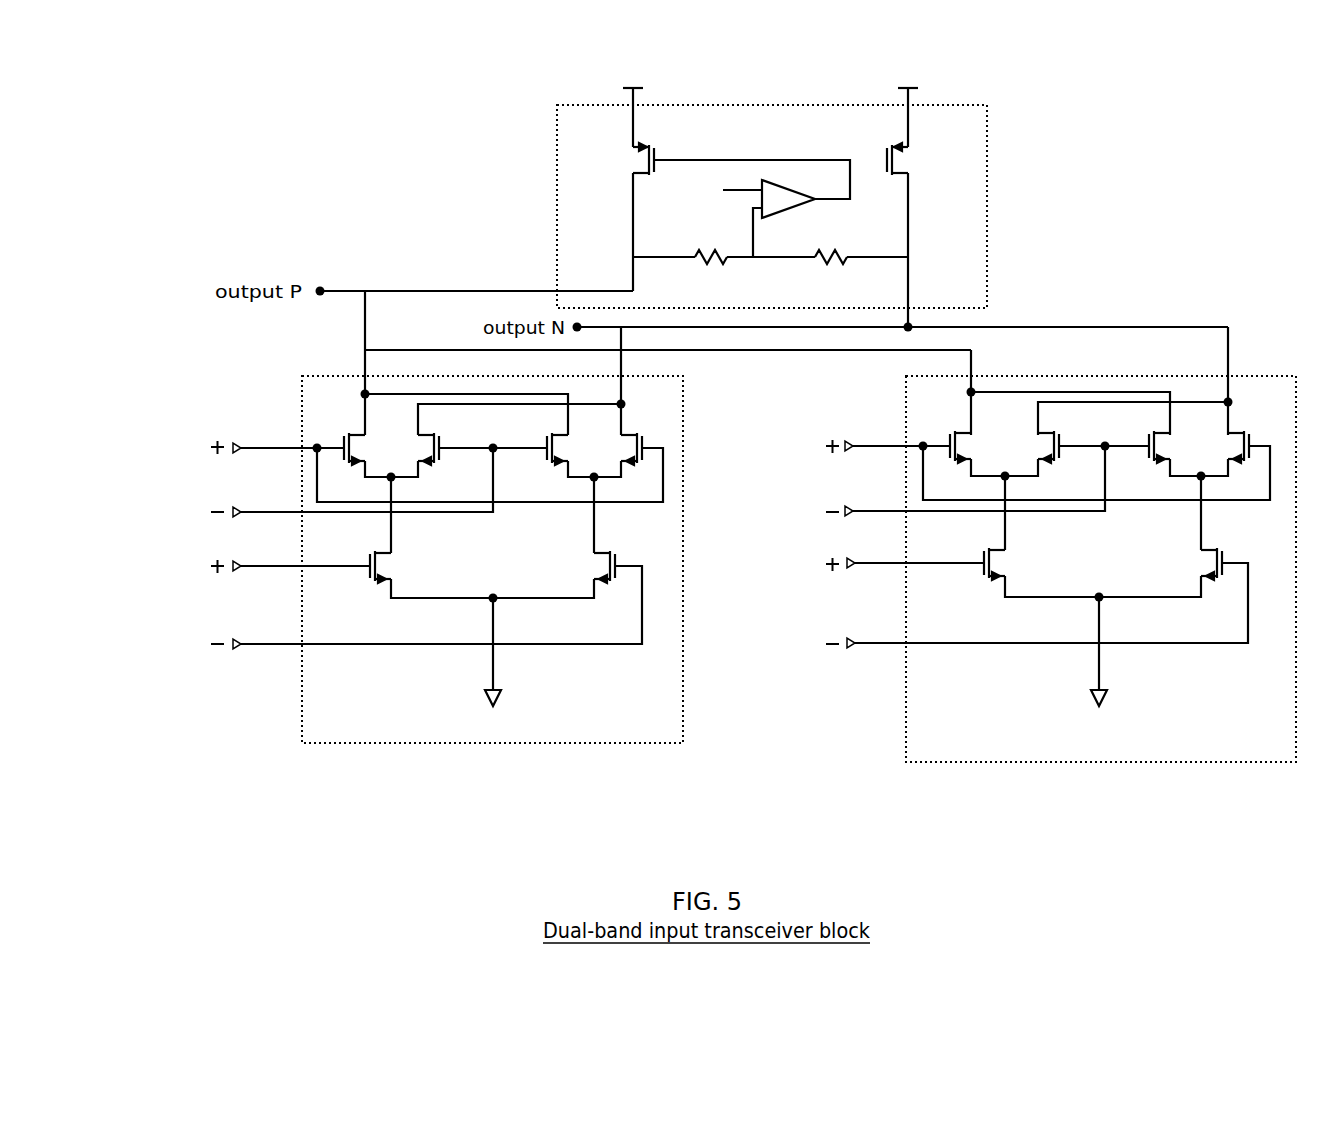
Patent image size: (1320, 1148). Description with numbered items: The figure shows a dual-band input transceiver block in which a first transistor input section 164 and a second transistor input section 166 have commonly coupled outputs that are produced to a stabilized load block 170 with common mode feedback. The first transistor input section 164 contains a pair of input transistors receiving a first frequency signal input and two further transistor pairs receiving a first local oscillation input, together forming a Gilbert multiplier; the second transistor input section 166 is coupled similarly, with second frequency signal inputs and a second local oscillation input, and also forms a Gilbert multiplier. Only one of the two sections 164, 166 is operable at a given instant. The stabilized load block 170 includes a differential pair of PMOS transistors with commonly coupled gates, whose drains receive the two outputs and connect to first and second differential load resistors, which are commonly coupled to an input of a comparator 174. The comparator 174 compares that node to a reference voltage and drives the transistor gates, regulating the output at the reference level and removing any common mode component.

The stabilized load block with common mode feedback 170 is at (659, 195).
The comparator 174 is at (790, 213).
The second transistor input section 166 is at (302, 700).
The first transistor input section 164 is at (904, 700).